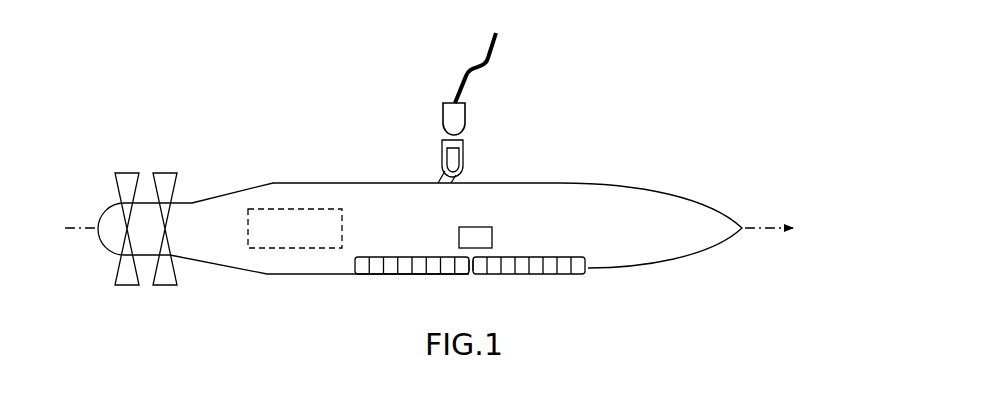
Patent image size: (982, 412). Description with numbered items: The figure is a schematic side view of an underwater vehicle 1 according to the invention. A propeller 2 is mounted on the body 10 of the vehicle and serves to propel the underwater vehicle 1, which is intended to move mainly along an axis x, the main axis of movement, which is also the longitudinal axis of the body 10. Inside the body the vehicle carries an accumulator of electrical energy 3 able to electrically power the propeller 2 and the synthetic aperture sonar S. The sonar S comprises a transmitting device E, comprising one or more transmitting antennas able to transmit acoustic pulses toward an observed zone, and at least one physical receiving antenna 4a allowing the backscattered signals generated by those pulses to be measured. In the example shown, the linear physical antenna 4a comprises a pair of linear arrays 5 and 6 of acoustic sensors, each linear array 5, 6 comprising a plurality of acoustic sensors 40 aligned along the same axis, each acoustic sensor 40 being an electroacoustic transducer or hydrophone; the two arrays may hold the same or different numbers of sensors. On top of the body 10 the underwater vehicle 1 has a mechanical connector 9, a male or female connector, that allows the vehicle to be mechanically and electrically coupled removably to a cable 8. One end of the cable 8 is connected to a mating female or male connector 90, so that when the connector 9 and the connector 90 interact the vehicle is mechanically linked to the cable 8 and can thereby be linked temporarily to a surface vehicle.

The underwater vehicle 1 is at (283, 67).
The propeller 2 is at (143, 168).
The accumulator of electrical energy 3 is at (283, 209).
The body 10 is at (220, 240).
The mechanical connector 9 is at (441, 158).
The connector 90 is at (443, 113).
The cable 8 is at (494, 53).
The transmitting device E is at (482, 227).
The physical receiving antenna 4a is at (538, 304).
The linear array of acoustic sensors 6 is at (406, 279).
The linear array of acoustic sensors 5 is at (547, 278).
The acoustic sensor 40 is at (473, 275).
The synthetic aperture sonar S is at (395, 297).